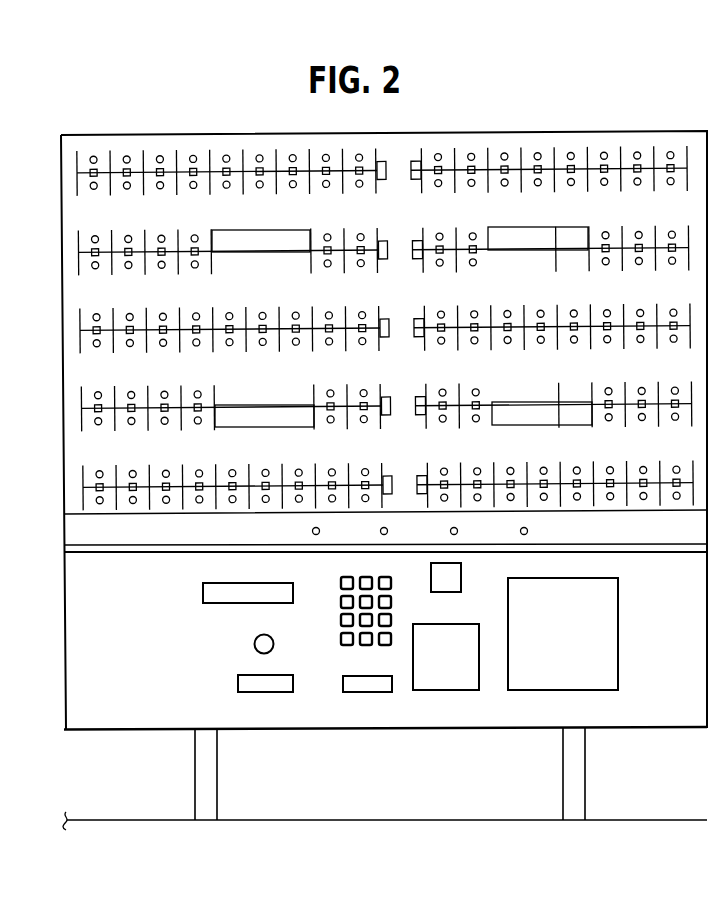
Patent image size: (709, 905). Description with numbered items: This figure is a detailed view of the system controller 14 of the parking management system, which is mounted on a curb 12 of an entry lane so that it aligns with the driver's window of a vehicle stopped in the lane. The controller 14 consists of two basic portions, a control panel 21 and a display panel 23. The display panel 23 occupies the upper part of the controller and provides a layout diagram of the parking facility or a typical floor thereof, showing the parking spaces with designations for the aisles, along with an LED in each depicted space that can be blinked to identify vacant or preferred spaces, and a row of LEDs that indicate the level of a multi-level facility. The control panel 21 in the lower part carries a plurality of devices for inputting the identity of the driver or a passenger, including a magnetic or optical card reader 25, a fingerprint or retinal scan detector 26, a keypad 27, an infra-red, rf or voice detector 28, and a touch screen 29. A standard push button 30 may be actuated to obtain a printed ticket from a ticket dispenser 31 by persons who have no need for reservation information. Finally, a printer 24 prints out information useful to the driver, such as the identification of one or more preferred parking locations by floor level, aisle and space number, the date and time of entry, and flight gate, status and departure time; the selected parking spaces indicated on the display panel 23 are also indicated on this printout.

The curb 12 is at (303, 820).
The system controller 14 is at (330, 130).
The control panel 21 is at (62, 258).
The display panel 23 is at (82, 682).
The printer 24 is at (217, 605).
The card reader 25 is at (365, 692).
The fingerprint or retinal scan detector 26 is at (437, 692).
The keypad 27 is at (363, 578).
The remote transmitter or voice detector 28 is at (462, 583).
The touch screen 29 is at (552, 690).
The push button 30 is at (275, 645).
The ticket dispenser 31 is at (258, 692).